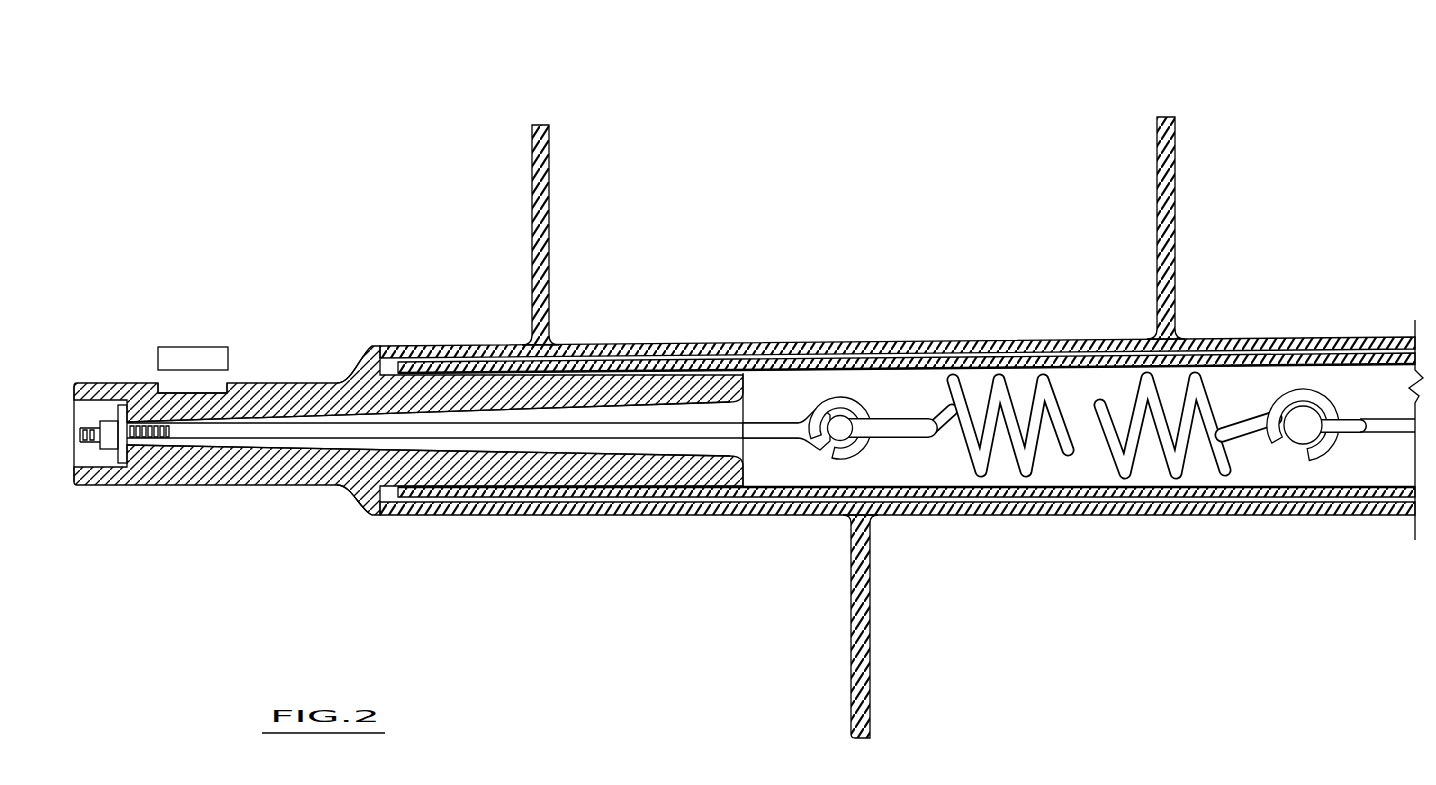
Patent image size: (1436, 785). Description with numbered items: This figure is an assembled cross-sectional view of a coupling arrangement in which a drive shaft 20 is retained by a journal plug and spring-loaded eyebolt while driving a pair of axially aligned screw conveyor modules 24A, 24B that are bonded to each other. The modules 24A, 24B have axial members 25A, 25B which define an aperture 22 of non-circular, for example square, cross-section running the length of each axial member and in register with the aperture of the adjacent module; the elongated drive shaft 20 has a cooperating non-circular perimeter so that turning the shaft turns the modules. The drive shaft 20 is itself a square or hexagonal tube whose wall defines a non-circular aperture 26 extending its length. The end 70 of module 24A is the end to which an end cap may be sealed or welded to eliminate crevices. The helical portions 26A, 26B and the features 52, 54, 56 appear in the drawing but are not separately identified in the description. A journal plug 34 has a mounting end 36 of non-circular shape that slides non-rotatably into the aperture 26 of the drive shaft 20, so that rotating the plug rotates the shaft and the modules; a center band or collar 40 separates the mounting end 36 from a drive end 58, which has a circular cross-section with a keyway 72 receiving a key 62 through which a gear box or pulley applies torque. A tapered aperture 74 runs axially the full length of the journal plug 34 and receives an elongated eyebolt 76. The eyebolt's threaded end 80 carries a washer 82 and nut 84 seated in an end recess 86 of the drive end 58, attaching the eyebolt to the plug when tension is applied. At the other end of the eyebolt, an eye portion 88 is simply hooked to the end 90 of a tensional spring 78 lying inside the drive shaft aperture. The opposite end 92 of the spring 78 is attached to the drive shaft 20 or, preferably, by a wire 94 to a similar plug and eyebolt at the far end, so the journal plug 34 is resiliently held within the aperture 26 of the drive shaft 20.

The drive shaft 20 is at (862, 361).
The aperture 22 is at (730, 497).
The screw conveyor module 24A is at (632, 336).
The screw conveyor module 24B is at (1236, 316).
The axial member 25A is at (782, 344).
The axial member 25B is at (1103, 513).
The non-circular aperture 26 is at (782, 470).
The fin 26A is at (408, 346).
The fin 26B is at (1032, 340).
The journal plug 34 is at (335, 498).
The mounting end 36 is at (600, 393).
The center band or collar 40 is at (356, 347).
The joint 52 is at (1003, 348).
The groove 54 is at (1026, 338).
The seam 56 is at (1010, 347).
The drive end 58 is at (197, 467).
The key 62 is at (190, 348).
The end of screw conveyor module 70 is at (356, 522).
The keyway 72 is at (222, 390).
The tapered aperture 74 is at (620, 447).
The elongated eyebolt 76 is at (724, 430).
The tensional spring 78 is at (972, 457).
The threaded end 80 is at (158, 447).
The washer 82 is at (110, 421).
The nut 84 is at (97, 432).
The end recess 86 is at (75, 444).
The eye portion 88 is at (845, 400).
The end of spring 90 is at (898, 428).
The opposite end of spring 92 is at (1313, 455).
The wire 94 is at (1387, 418).